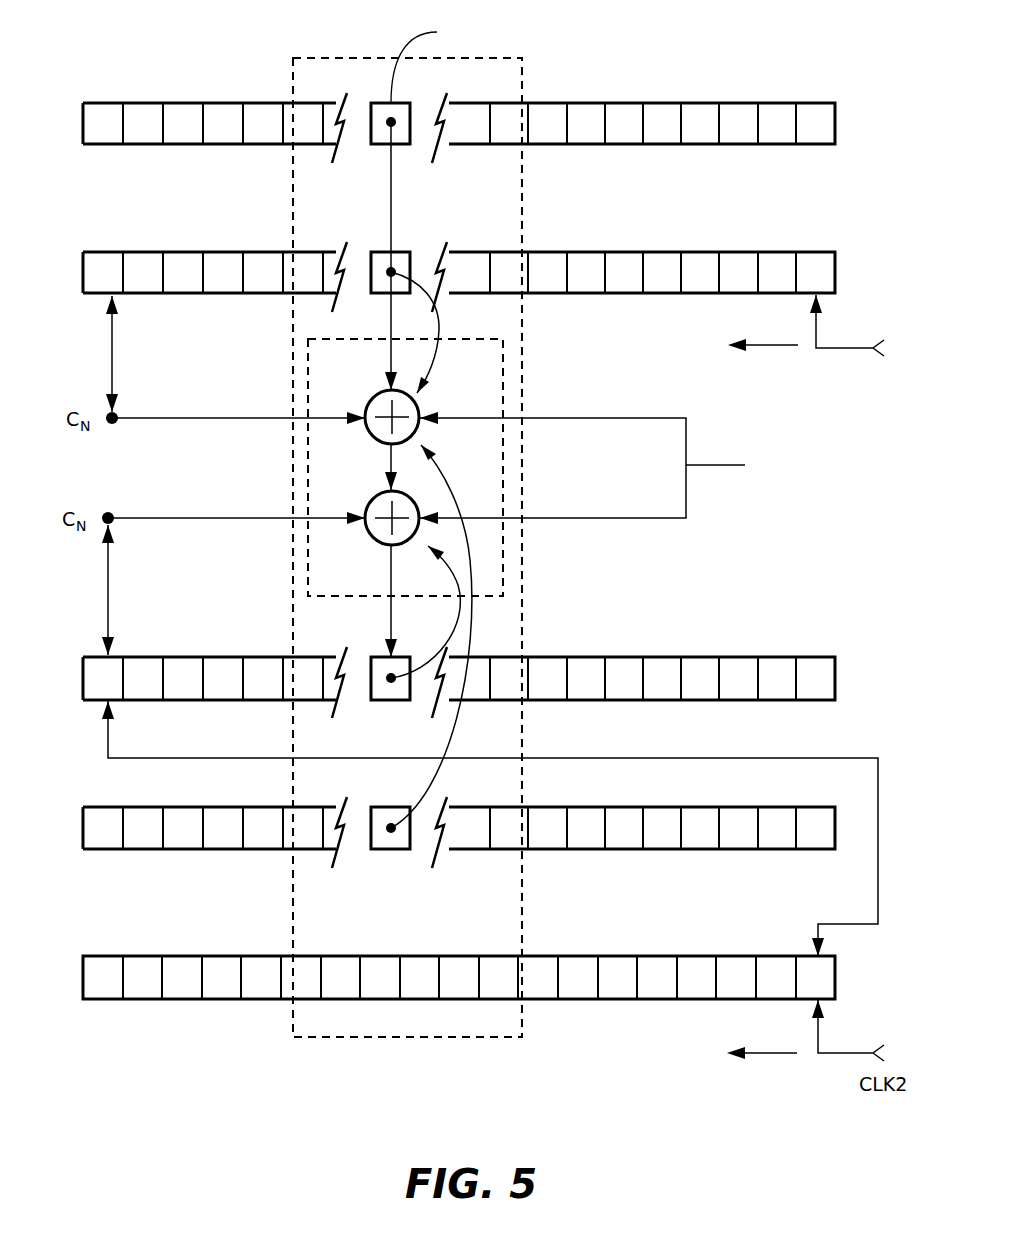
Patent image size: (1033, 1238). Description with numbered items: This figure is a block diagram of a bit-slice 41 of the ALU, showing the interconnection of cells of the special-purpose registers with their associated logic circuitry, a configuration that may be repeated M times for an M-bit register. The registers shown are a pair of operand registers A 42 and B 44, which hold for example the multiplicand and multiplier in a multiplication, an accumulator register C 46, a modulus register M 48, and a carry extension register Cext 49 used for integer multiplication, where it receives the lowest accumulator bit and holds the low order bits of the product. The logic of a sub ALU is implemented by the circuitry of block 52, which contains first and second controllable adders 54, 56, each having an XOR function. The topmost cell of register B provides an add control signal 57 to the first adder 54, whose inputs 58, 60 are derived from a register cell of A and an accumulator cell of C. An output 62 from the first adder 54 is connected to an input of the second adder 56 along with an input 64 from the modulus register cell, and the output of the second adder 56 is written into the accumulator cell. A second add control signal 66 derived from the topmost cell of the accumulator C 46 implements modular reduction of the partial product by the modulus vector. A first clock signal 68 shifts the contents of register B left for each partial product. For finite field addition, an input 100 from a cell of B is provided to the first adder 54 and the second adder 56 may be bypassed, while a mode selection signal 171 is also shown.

The bit-slice 41 is at (522, 1018).
The operand register A 42 is at (812, 103).
The operand register B 44 is at (807, 253).
The accumulator register C 46 is at (807, 657).
The modulus register M 48 is at (807, 807).
The carry extension register Cext 49 is at (697, 992).
The block 52 is at (362, 597).
The first controllable adder 54 is at (380, 394).
The second controllable adder 56 is at (378, 494).
The add control signal 57 is at (112, 355).
The input 58 is at (391, 316).
The input 60 is at (465, 508).
The output 62 is at (394, 452).
The input 64 is at (470, 640).
The second add control signal 66 is at (108, 575).
The clock signal CLK1 68 is at (850, 348).
The input 100 is at (439, 326).
The mode selection signal Z/F2M 171 is at (712, 466).